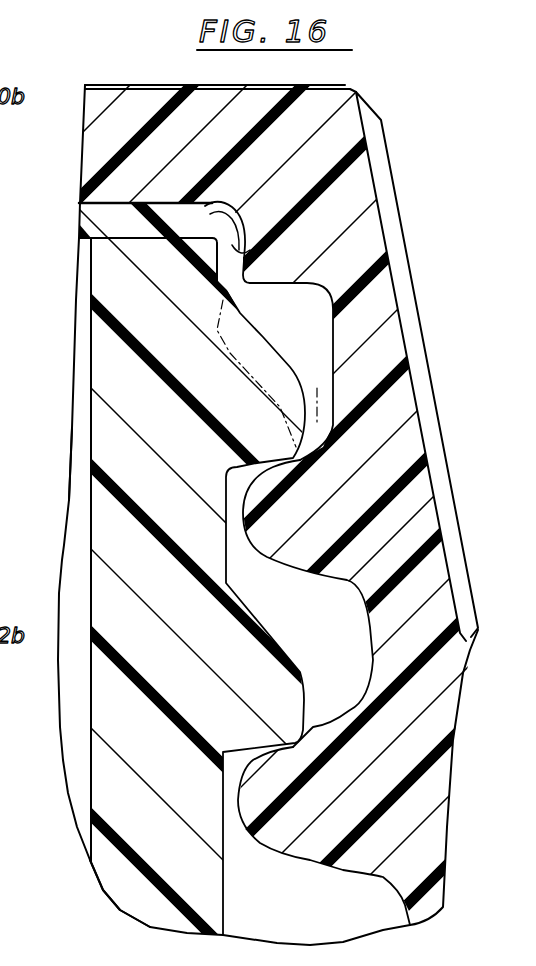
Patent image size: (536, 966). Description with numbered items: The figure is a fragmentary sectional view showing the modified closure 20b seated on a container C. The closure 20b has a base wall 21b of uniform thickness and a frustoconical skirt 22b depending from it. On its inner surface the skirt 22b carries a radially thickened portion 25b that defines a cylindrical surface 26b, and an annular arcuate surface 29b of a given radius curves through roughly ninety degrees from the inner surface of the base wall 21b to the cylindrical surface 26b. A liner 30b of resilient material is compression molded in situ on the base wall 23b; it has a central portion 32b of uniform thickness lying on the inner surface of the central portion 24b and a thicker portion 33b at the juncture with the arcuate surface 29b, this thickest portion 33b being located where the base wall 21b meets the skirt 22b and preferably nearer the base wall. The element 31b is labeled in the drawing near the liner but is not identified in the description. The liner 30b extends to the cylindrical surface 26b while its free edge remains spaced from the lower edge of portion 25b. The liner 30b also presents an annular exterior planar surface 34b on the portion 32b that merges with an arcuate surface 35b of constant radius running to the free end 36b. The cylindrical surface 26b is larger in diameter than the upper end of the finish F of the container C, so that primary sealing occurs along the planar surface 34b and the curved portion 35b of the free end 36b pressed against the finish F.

The closure 20b is at (376, 88).
The base wall 21b is at (152, 85).
The frustoconical skirt 22b is at (387, 350).
The base wall 23b is at (93, 153).
The central portion 24b is at (83, 202).
The radially thickened portion 25b is at (277, 273).
The cylindrical surface 26b is at (215, 308).
The annular arcuate surface 29b is at (237, 205).
The liner 30b is at (147, 238).
The strip end 31b is at (87, 227).
The central portion of the liner 32b is at (147, 240).
The thicker portion of the liner 33b is at (193, 190).
The annular exterior planar surface 34b is at (98, 345).
The arcuate surface of the liner 35b is at (205, 258).
The free end of the liner 36b is at (258, 254).
The finish F is at (258, 425).
The container C is at (110, 798).